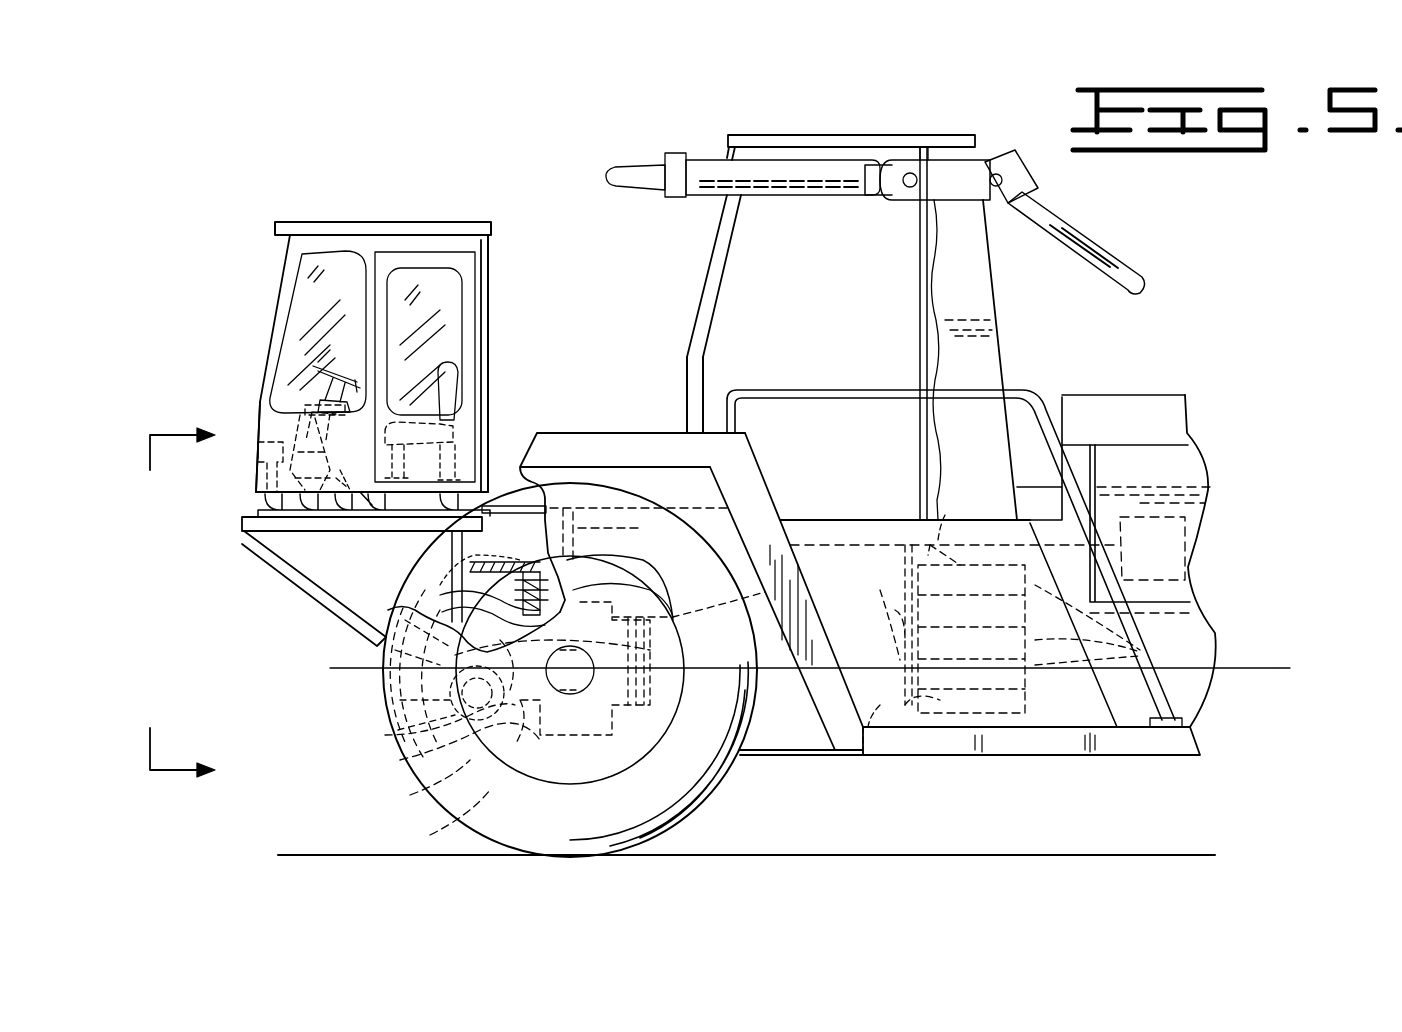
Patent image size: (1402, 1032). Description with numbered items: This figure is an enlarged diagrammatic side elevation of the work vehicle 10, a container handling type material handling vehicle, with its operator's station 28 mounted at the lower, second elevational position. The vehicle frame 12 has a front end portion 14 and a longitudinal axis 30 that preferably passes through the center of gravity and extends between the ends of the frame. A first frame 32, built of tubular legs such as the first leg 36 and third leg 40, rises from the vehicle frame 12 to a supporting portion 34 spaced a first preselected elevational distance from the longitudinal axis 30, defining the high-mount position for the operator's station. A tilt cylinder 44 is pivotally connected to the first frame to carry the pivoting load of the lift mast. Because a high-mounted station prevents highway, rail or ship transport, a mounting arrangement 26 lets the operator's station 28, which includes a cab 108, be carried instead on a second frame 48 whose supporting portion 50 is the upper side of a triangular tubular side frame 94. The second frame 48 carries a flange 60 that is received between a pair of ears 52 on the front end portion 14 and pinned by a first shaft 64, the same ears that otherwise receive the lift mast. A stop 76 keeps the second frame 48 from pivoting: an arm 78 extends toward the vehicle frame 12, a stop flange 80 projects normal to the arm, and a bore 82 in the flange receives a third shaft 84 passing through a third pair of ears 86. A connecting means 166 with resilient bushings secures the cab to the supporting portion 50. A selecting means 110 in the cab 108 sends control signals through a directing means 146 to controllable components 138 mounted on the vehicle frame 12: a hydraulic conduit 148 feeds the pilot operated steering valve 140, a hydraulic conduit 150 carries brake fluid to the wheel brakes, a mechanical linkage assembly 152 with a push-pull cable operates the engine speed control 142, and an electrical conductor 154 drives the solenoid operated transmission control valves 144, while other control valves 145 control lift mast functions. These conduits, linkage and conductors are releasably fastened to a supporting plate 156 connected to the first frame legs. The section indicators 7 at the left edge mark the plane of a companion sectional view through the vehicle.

The work vehicle 10 is at (1312, 310).
The vehicle frame 12 is at (1160, 752).
The front end portion 14 is at (448, 793).
The mounting arrangement 26 is at (200, 204).
The operator's station 28 is at (240, 312).
The longitudinal axis 30 is at (1270, 665).
The first frame 32 is at (708, 226).
The supporting portion 34 is at (872, 135).
The first leg 36 is at (985, 305).
The third leg 40 is at (705, 287).
The tilt cylinder 44 is at (664, 160).
The second frame 48 is at (312, 592).
The supporting portion 50 is at (244, 527).
The first pair of spaced apart ears 52 is at (400, 765).
The first flange 60 is at (385, 700).
The first shaft 64 is at (385, 735).
The stop 76 is at (520, 542).
The arm 78 is at (455, 548).
The stop flange 80 is at (605, 570).
The bore 82 is at (640, 598).
The third shaft 84 is at (460, 580).
The third pair of spaced apart ears 86 is at (470, 600).
The first tubular side frame 94 is at (262, 553).
The cab 108 is at (482, 292).
The selecting means 110 is at (258, 403).
The controllable components 138 is at (960, 727).
The pilot operated steering valve 140 is at (1030, 700).
The engine speed control 142 is at (1205, 486).
The transmission control valves 144 is at (1134, 648).
The other control valves 145 is at (1215, 610).
The directing means 146 is at (868, 516).
The hydraulic conduit 148 is at (885, 735).
The hydraulic conduit 150 is at (600, 530).
The mechanical linkage assembly 152 is at (938, 520).
The electrical conductor 154 is at (900, 612).
The supporting plate 156 is at (918, 290).
The connecting means 166 is at (242, 505).
The section line 7 is at (163, 607).